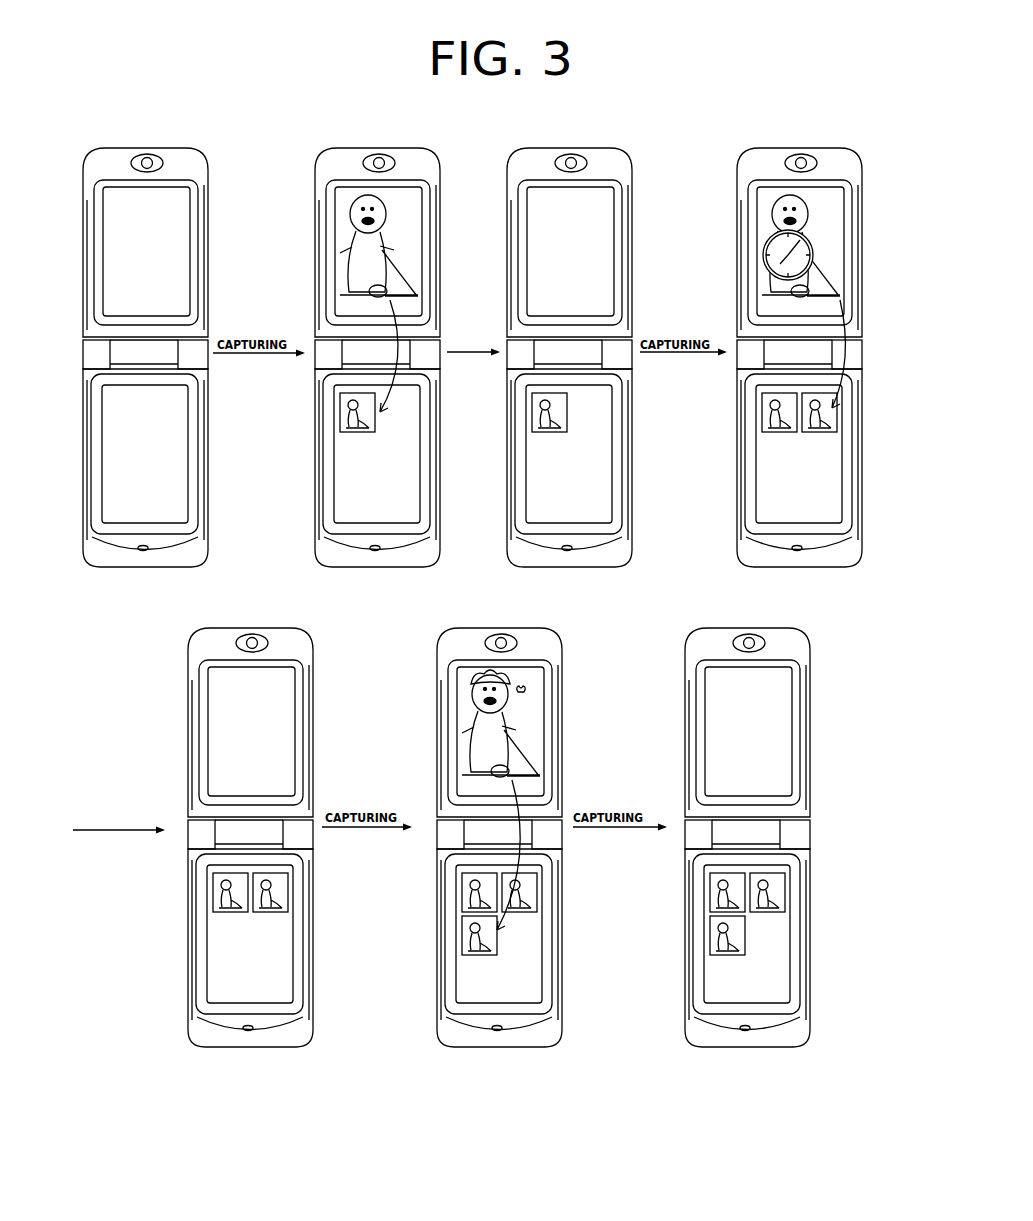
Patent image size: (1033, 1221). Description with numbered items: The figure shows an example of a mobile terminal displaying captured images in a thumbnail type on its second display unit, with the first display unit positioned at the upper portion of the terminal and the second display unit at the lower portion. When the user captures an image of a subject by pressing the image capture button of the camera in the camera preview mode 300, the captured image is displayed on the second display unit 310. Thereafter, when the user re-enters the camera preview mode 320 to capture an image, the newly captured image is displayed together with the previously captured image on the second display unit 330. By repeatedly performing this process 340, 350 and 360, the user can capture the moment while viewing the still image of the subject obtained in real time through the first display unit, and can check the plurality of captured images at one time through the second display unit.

The camera preview mode state 300 is at (208, 488).
The first captured image display state 310 is at (440, 488).
The re-entered camera preview mode state 320 is at (632, 488).
The combined captured image display state 330 is at (862, 488).
The repeated camera preview mode state 340 is at (313, 965).
The repeated capture display state 350 is at (562, 965).
The repeated camera preview mode state with thumbnails 360 is at (812, 965).